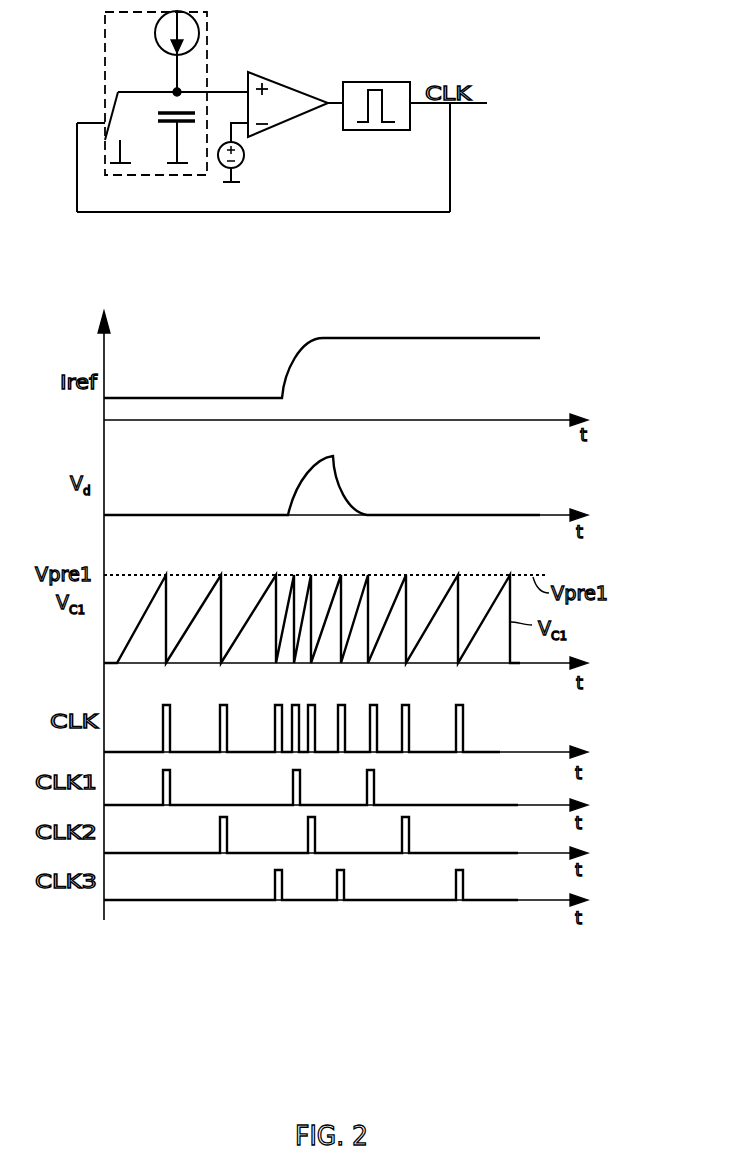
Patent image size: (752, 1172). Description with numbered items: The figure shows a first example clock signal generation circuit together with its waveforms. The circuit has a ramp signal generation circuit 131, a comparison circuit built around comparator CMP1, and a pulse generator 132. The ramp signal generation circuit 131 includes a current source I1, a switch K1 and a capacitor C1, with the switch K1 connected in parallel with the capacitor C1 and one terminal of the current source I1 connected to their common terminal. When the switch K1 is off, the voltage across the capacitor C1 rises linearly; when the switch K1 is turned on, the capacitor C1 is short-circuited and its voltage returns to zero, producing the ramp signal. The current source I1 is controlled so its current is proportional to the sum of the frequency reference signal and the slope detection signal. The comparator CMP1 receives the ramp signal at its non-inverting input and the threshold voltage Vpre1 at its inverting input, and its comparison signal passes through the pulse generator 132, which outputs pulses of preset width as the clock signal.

The ramp signal generation circuit 131 is at (170, 93).
The pulse generator 132 is at (360, 130).
The current source I1 is at (166, 51).
The capacitor C1 is at (160, 138).
The switch K1 is at (124, 127).
The comparator CMP1 is at (288, 104).
The threshold voltage Vpre1 is at (264, 152).